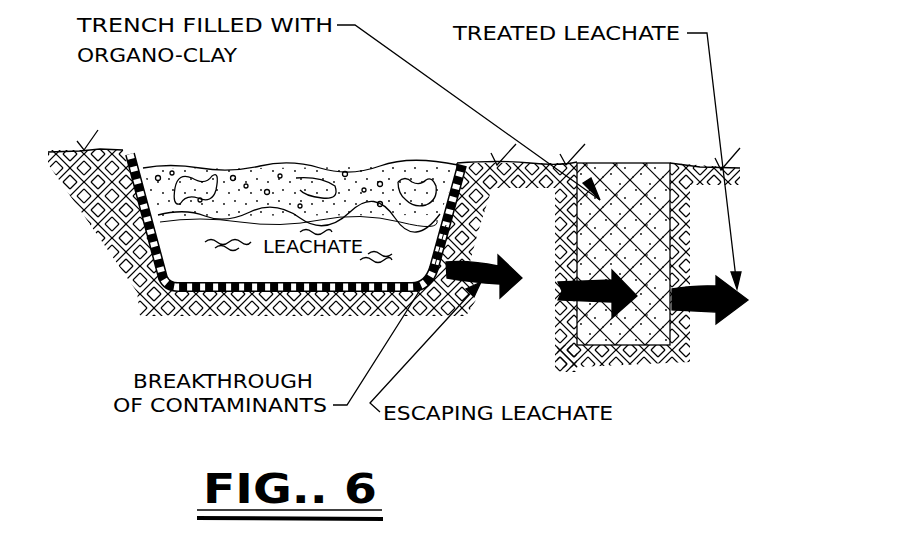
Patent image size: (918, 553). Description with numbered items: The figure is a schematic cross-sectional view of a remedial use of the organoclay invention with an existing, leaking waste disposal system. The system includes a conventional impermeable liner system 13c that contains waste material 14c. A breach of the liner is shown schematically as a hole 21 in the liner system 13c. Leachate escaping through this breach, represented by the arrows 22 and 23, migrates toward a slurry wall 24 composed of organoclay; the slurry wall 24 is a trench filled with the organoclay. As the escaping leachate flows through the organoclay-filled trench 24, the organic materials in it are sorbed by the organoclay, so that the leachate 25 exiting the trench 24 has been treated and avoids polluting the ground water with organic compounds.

The impermeable liner system 13c is at (130, 153).
The waste material 14c is at (308, 166).
The hole 21 is at (431, 268).
The arrow 22 is at (492, 264).
The arrow 23 is at (556, 302).
The slurry wall 24 is at (622, 165).
The leachate 25 is at (705, 313).